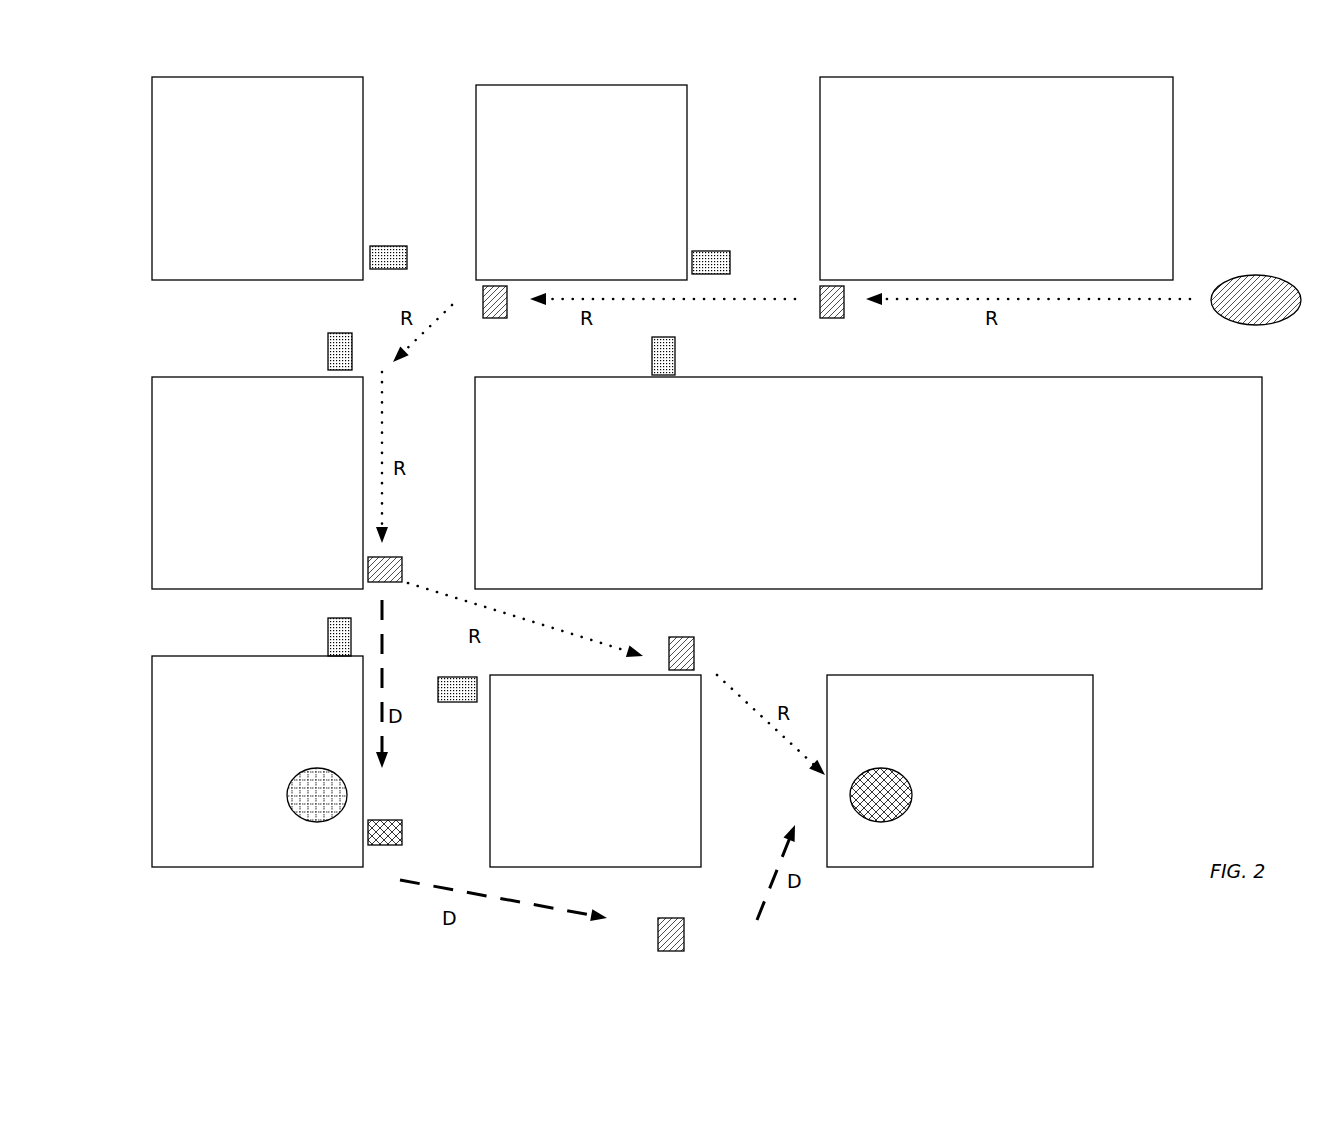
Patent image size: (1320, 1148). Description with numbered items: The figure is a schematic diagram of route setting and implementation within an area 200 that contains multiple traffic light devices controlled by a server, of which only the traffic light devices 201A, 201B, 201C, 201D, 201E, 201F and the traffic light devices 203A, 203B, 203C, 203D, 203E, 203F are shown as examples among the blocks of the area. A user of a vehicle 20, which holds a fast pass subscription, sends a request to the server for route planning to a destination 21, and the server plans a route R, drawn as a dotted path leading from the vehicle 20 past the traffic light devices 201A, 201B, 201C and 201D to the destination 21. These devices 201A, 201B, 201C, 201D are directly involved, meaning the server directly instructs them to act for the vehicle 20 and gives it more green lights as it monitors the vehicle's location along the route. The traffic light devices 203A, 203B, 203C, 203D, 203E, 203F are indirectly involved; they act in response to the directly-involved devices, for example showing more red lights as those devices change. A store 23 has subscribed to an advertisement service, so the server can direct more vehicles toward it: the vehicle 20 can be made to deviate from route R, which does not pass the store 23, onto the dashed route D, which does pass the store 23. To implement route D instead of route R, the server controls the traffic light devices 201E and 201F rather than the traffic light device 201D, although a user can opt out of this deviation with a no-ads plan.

The area 200 is at (1308, 66).
The vehicle 20 is at (1256, 287).
The destination 21 is at (908, 795).
The store 23 is at (312, 780).
The traffic light device 201A is at (839, 317).
The traffic light device 201B is at (502, 317).
The traffic light device 201C is at (410, 557).
The traffic light device 201D is at (716, 649).
The traffic light device 201E is at (409, 820).
The traffic light device 201F is at (705, 929).
The traffic light device 203A is at (727, 245).
The traffic light device 203B is at (694, 356).
The traffic light device 203C is at (397, 243).
The traffic light device 203D is at (312, 343).
The traffic light device 203E is at (456, 709).
The traffic light device 203F is at (311, 629).